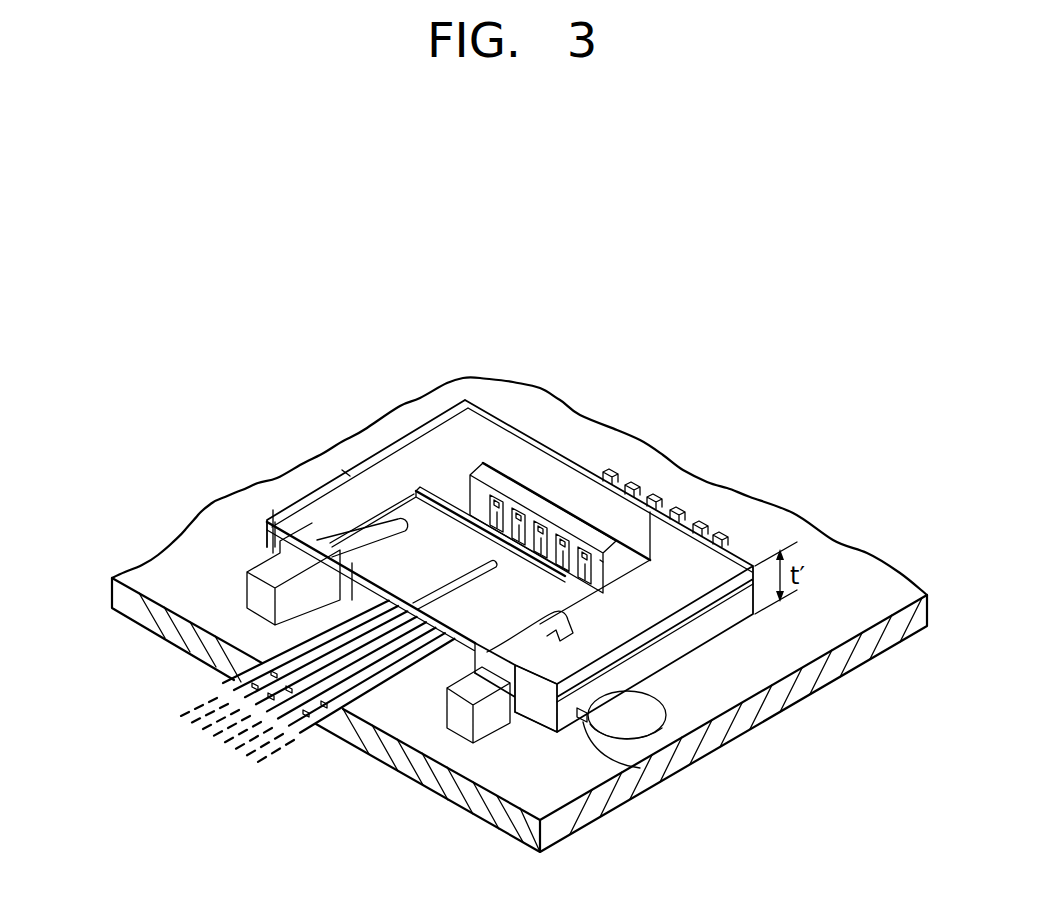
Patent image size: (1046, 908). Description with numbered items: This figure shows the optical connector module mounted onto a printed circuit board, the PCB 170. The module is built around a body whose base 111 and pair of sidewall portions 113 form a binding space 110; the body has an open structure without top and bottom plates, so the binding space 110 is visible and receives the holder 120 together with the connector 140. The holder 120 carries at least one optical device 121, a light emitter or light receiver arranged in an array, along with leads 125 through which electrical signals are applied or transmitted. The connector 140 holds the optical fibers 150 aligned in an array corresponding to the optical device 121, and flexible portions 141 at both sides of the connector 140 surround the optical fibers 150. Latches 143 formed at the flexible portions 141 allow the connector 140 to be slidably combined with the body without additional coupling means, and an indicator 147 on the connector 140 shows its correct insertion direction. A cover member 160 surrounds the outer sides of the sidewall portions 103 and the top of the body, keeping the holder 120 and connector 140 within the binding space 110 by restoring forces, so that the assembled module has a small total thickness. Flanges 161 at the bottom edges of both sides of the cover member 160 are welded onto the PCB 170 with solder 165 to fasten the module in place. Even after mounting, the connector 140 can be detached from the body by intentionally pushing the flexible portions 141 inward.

The sidewall portions 103 is at (553, 698).
The binding space 110 is at (455, 500).
The base 111 is at (640, 518).
The sidewall portions 113 is at (357, 487).
The holder 120 is at (490, 466).
The optical device 121 is at (508, 500).
The leads 125 is at (590, 466).
The connector 140 is at (238, 586).
The flexible portions 141 is at (465, 733).
The latches 143 is at (473, 643).
The indicator 147 is at (437, 583).
The optical fibers 150 is at (303, 724).
The cover member 160 is at (691, 649).
The flanges 161 is at (640, 768).
The solder 165 is at (643, 723).
The PCB 170 is at (832, 585).